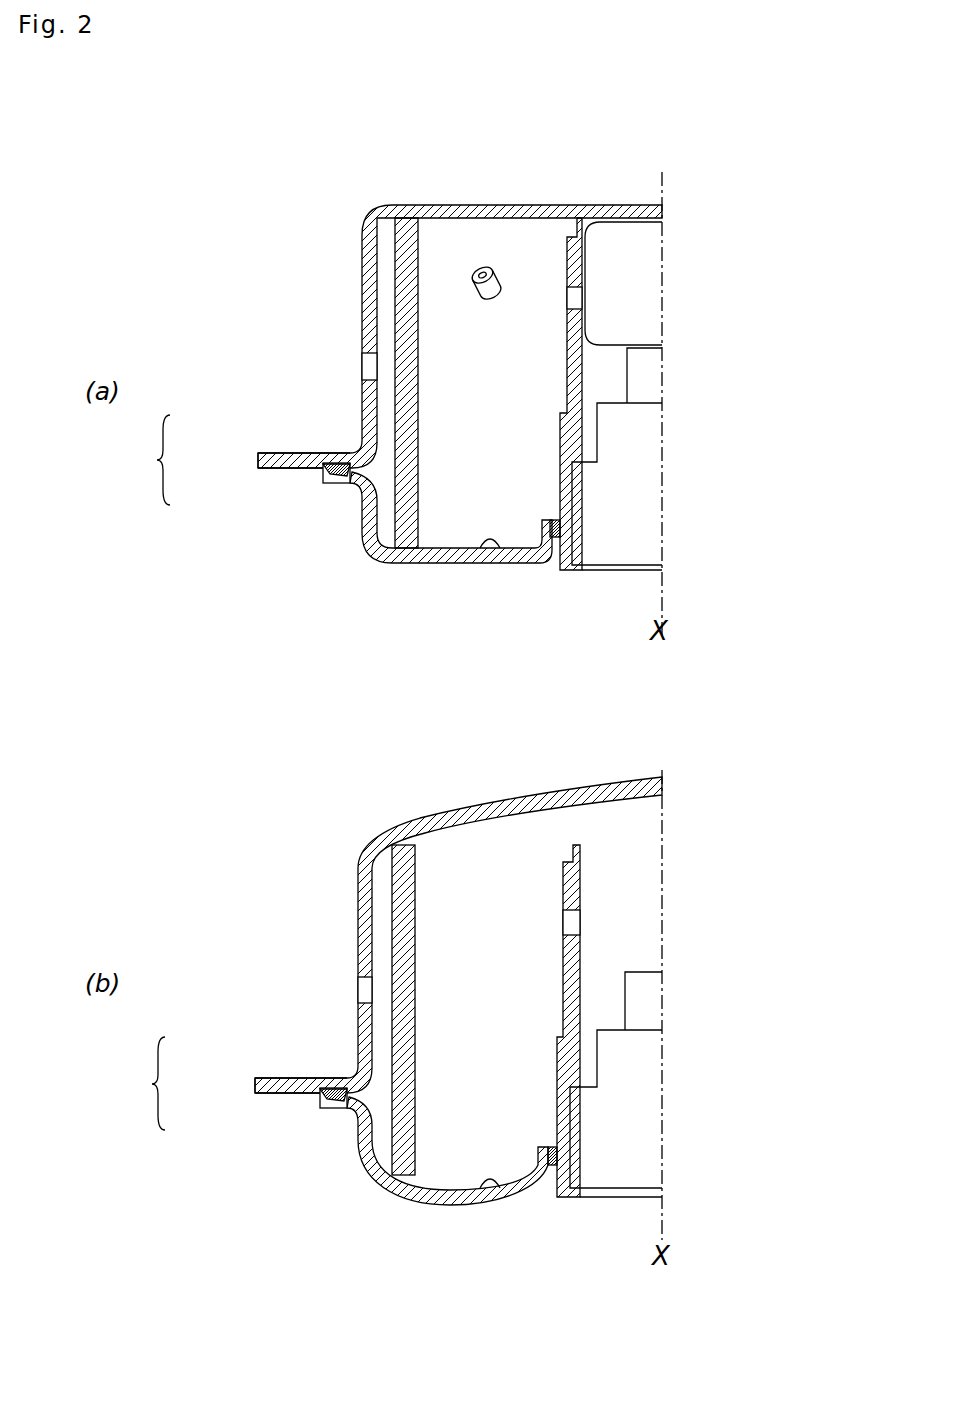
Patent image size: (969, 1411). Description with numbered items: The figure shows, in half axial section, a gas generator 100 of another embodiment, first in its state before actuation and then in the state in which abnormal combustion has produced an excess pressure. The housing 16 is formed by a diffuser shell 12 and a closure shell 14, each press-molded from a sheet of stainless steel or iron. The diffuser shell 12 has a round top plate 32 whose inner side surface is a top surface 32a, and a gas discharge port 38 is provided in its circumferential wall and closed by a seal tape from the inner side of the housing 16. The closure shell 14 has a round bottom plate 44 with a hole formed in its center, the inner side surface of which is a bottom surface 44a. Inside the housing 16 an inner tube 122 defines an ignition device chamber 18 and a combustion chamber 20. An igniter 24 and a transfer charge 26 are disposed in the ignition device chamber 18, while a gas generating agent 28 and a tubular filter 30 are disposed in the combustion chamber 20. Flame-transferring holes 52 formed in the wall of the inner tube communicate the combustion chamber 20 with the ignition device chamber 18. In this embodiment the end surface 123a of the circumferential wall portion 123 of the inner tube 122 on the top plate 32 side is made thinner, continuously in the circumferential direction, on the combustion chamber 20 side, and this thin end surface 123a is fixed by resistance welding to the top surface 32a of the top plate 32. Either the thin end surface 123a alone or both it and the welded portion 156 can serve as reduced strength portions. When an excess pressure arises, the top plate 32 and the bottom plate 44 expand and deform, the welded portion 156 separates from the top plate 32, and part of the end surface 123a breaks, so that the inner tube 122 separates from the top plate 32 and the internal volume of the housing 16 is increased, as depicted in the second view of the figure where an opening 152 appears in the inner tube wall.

The gas generator 100 is at (633, 176).
The diffuser shell 12 is at (362, 410).
The closure shell 14 is at (362, 520).
The housing 16 is at (146, 772).
The ignition device chamber 18 is at (617, 387).
The combustion chamber 20 is at (470, 466).
The igniter 24 is at (645, 432).
The transfer charge 26 is at (645, 287).
The gas generating agent 28 is at (479, 296).
The tubular filter 30 is at (415, 368).
The top plate 32 is at (465, 205).
The top surface 32a is at (452, 216).
The gas discharge port 38 is at (363, 368).
The bottom plate 44 is at (452, 565).
The bottom surface 44a is at (493, 562).
The flame-transferring holes 52 is at (566, 297).
The inner tube 122 is at (566, 372).
The circumferential wall portion 123 is at (567, 340).
The end surface of the circumferential wall portion 123a is at (570, 230).
The opening in partition 152 is at (563, 922).
The welded portion 156 is at (580, 217).